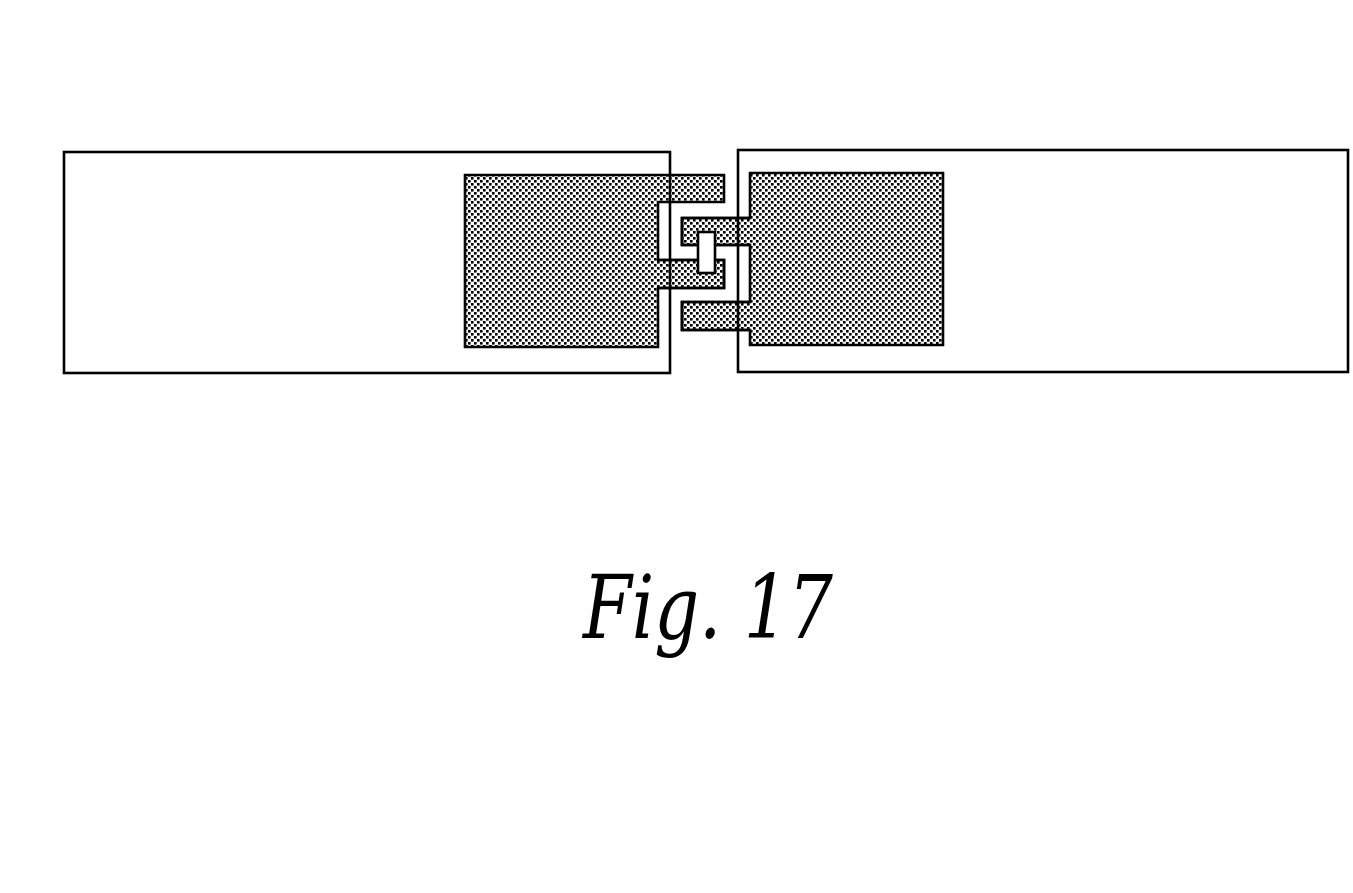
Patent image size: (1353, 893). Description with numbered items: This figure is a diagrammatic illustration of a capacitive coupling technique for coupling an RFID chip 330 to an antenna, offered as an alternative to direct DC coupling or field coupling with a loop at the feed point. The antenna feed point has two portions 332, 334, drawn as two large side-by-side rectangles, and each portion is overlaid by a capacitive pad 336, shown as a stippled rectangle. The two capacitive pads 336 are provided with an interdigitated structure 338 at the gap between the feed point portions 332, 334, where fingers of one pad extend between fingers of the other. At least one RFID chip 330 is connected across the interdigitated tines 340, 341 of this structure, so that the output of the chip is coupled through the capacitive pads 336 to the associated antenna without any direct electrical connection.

The RFID chip 330 is at (696, 252).
The antenna feed point portion 332 is at (287, 281).
The antenna feed point portion 334 is at (1193, 281).
The capacitive pad 336 is at (938, 463).
The interdigitated structure 338 is at (715, 335).
The interdigitated tine 340 is at (723, 222).
The interdigitated tine 341 is at (683, 275).